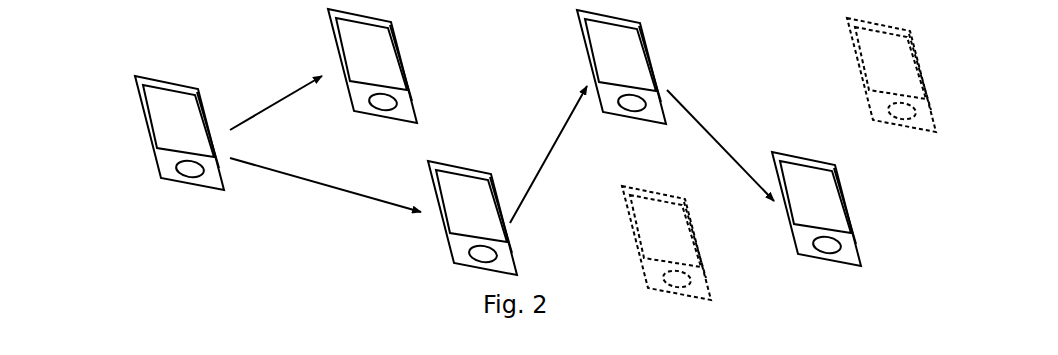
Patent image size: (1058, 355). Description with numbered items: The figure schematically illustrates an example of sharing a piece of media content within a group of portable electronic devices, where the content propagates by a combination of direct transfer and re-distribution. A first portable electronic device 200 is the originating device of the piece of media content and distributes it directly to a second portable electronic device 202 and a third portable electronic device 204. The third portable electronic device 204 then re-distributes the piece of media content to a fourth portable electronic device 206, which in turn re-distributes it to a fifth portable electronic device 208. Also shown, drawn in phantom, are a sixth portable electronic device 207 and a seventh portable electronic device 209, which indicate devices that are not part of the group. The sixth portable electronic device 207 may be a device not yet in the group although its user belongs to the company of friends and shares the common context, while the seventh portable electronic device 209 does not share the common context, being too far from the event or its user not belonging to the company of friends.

The first portable electronic device 200 is at (170, 158).
The second portable electronic device 202 is at (360, 63).
The third portable electronic device 204 is at (463, 240).
The fourth portable electronic device 206 is at (610, 63).
The sixth portable electronic device 207 is at (690, 248).
The fifth portable electronic device 208 is at (828, 192).
The seventh portable electronic device 209 is at (873, 65).